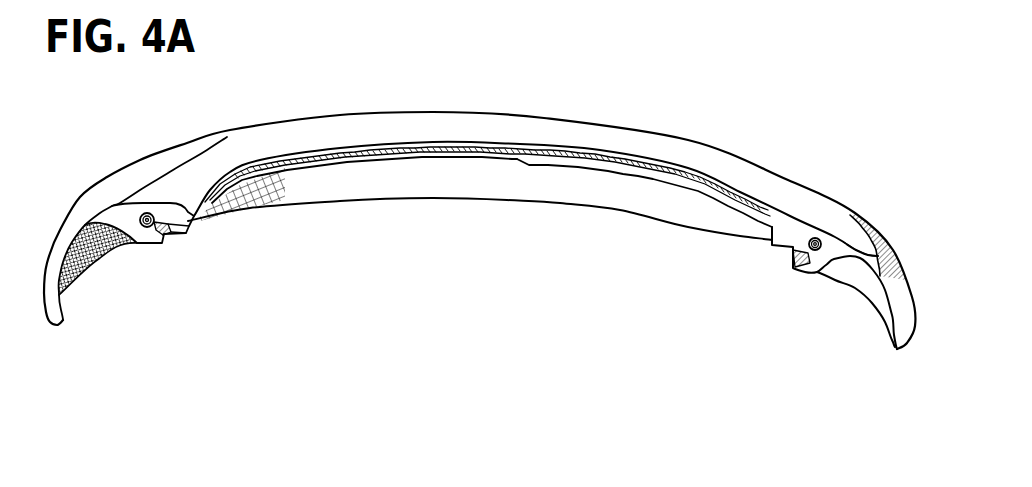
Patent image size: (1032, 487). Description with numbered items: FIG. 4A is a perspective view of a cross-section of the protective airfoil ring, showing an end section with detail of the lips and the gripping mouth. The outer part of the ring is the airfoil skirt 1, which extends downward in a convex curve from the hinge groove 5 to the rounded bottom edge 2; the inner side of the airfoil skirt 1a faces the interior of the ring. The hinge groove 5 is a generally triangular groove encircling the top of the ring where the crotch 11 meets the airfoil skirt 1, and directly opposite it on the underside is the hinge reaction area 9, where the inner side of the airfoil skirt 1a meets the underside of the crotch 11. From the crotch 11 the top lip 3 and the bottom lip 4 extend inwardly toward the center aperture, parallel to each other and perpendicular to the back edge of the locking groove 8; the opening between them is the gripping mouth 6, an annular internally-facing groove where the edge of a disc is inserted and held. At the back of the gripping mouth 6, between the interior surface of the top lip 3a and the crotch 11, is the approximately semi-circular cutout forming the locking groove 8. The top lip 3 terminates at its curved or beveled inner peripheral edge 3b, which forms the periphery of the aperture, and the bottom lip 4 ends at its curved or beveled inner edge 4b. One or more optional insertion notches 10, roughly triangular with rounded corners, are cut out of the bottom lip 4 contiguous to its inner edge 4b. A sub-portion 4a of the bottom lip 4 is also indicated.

The airfoil skirt 1 is at (55, 273).
The inner side of the airfoil skirt 1a is at (506, 185).
The bottom edge of the airfoil skirt 2 is at (896, 352).
The top lip 3 is at (160, 213).
The interior surface of the top lip 3a is at (177, 228).
The inner peripheral edge of the top lip 3b is at (180, 223).
The bottom lip 4 is at (431, 150).
The seal member first portion 4a is at (150, 238).
The inner edge of the bottom lip 4b is at (160, 243).
The hinge groove 5 is at (845, 223).
The gripping mouth 6 is at (795, 257).
The locking groove 8 is at (810, 243).
The hinge reaction area 9 is at (850, 256).
The insertion notch 10 is at (531, 160).
The crotch 11 is at (123, 220).